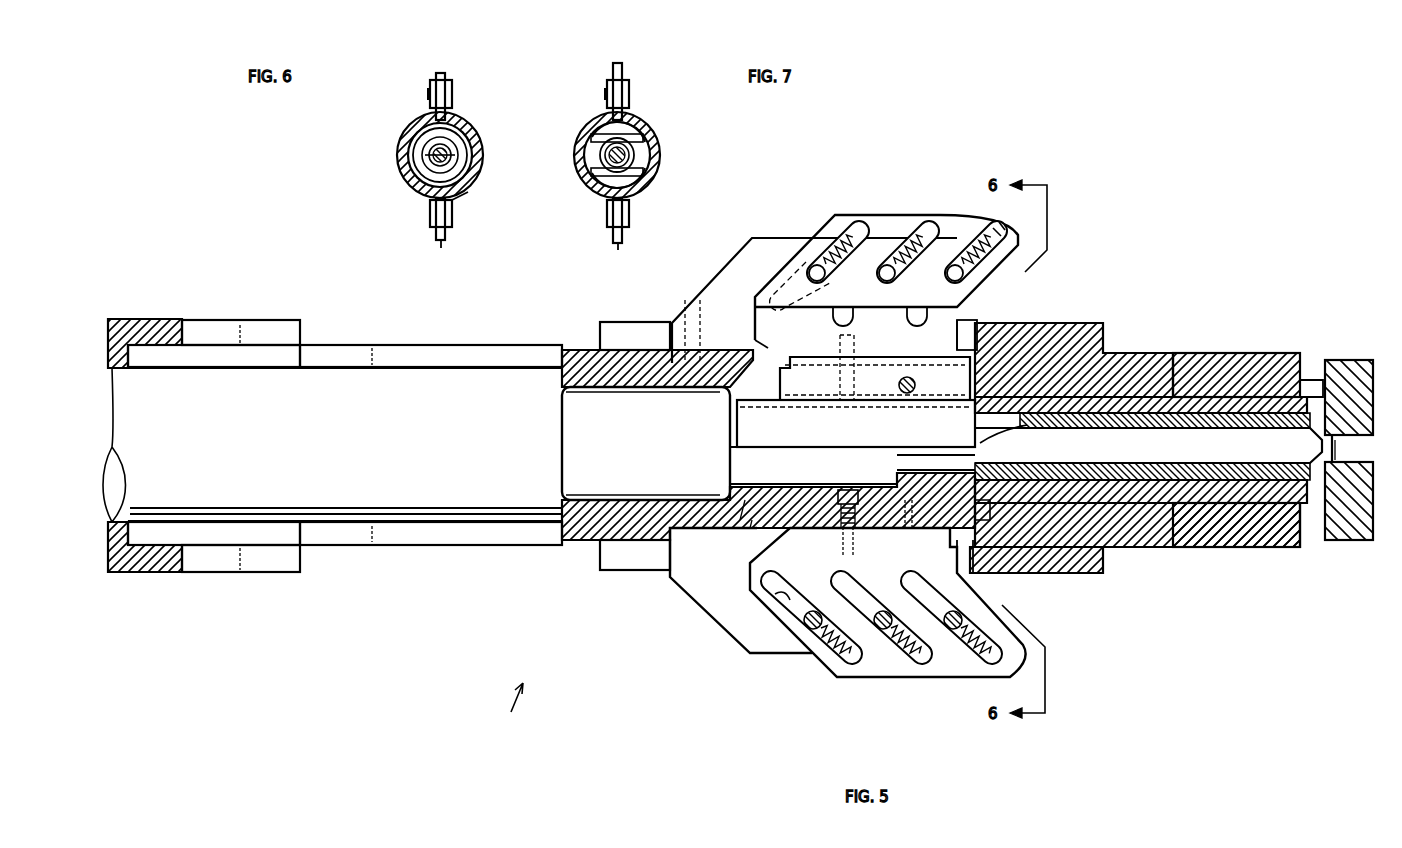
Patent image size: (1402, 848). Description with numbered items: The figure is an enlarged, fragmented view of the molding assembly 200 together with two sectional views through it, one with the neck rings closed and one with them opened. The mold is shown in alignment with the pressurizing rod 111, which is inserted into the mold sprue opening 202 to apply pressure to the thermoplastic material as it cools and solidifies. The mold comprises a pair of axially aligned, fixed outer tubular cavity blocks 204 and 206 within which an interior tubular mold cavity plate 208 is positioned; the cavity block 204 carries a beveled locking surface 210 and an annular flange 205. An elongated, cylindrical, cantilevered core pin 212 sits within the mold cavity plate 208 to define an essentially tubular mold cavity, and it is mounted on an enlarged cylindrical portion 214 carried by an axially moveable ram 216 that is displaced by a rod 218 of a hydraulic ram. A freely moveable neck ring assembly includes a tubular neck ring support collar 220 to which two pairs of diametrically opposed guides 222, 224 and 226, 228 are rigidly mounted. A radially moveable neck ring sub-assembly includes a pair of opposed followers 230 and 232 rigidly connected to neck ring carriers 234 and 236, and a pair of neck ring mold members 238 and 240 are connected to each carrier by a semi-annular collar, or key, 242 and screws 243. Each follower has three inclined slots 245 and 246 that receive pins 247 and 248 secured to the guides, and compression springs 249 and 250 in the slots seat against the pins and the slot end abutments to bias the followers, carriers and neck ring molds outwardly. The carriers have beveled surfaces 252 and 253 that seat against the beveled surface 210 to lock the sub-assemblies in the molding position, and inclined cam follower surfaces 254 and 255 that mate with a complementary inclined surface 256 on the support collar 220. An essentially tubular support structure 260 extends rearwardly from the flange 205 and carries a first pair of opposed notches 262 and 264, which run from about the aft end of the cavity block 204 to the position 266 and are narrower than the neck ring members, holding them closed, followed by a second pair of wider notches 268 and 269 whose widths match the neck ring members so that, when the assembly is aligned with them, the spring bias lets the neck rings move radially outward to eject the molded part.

In FIG. 5, the pressurizing rod 111 is at (1340, 470).
In FIG. 5, the molding assembly 200 is at (508, 710).
In FIG. 5, the mold sprue opening 202 is at (1350, 435).
In FIG. 5, the outer tubular cavity block 204 is at (1140, 340).
In FIG. 5, the annular flange 205 is at (1100, 573).
In FIG. 5, the outer tubular cavity block 206 is at (1240, 353).
In FIG. 5, the interior tubular mold cavity plate 208 is at (1312, 380).
In FIG. 5, the beveled locking surface 210 is at (965, 375).
In FIG. 5, the core pin 212 is at (1206, 451).
In FIG. 5, the enlarged cylindrical portion 214 is at (742, 462).
In FIG. 5, the axially moveable ram 216 is at (621, 443).
In FIG. 5, the rod 218 is at (366, 446).
In FIG. 5, the neck ring support collar 220 is at (660, 548).
In FIG. 6, the guide 222 is at (428, 88).
In FIG. 7, the guide 222 is at (605, 88).
In FIG. 5, the guide 222 is at (772, 238).
In FIG. 6, the guide 224 is at (452, 88).
In FIG. 7, the guide 224 is at (629, 88).
In FIG. 6, the guide 226 is at (430, 220).
In FIG. 7, the guide 226 is at (607, 220).
In FIG. 6, the guide 228 is at (452, 220).
In FIG. 7, the guide 228 is at (629, 220).
In FIG. 5, the guide 228 is at (768, 653).
In FIG. 6, the follower 230 is at (441, 73).
In FIG. 7, the follower 230 is at (618, 63).
In FIG. 5, the follower 230 is at (892, 215).
In FIG. 6, the follower 232 is at (441, 240).
In FIG. 7, the follower 232 is at (618, 243).
In FIG. 5, the follower 232 is at (890, 678).
In FIG. 5, the neck ring carrier 234 is at (871, 433).
In FIG. 5, the neck ring carrier 236 is at (760, 545).
In FIG. 6, the neck ring mold member 238 is at (435, 160).
In FIG. 7, the neck ring mold member 238 is at (622, 168).
In FIG. 5, the neck ring mold member 238 is at (990, 512).
In FIG. 6, the neck ring mold member 240 is at (414, 148).
In FIG. 7, the neck ring mold member 240 is at (625, 130).
In FIG. 5, the semi-annular collar 242 is at (850, 535).
In FIG. 5, the screws 243 is at (905, 377).
In FIG. 5, the inclined slot 245 is at (995, 228).
In FIG. 5, the inclined slot 246 is at (790, 594).
In FIG. 5, the pin 247 is at (825, 278).
In FIG. 5, the pin 248 is at (810, 612).
In FIG. 5, the compression spring 249 is at (846, 232).
In FIG. 5, the compression spring 250 is at (882, 645).
In FIG. 5, the beveled surface 252 is at (957, 340).
In FIG. 5, the beveled surface 253 is at (975, 553).
In FIG. 5, the inclined cam follower surface 254 is at (775, 400).
In FIG. 5, the inclined cam follower surface 255 is at (745, 500).
In FIG. 5, the inclined surface 256 is at (752, 522).
In FIG. 6, the tubular support structure 260 is at (483, 155).
In FIG. 7, the tubular support structure 260 is at (660, 155).
In FIG. 5, the tubular support structure 260 is at (1045, 573).
In FIG. 6, the notch 262 is at (452, 142).
In FIG. 5, the notch 262 is at (628, 322).
In FIG. 6, the notch 264 is at (455, 195).
In FIG. 5, the notch 264 is at (628, 570).
In FIG. 5, the position 266 is at (600, 555).
In FIG. 7, the notch 268 is at (640, 135).
In FIG. 5, the notch 268 is at (388, 345).
In FIG. 7, the notch 269 is at (640, 178).
In FIG. 5, the notch 269 is at (398, 545).